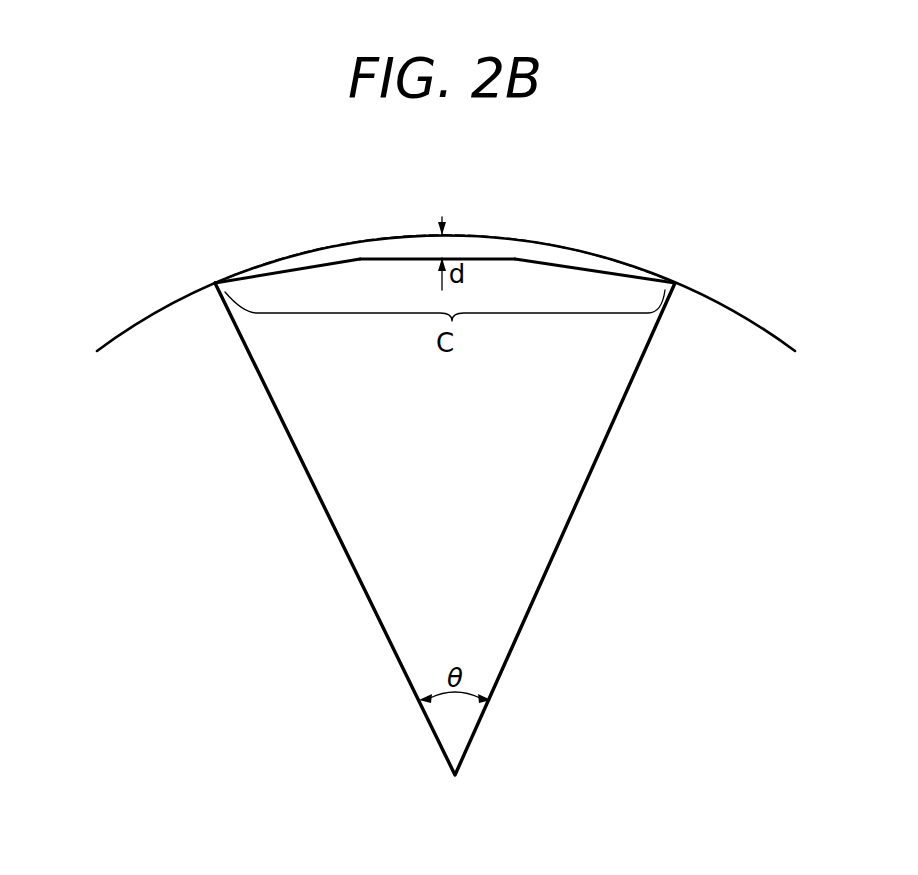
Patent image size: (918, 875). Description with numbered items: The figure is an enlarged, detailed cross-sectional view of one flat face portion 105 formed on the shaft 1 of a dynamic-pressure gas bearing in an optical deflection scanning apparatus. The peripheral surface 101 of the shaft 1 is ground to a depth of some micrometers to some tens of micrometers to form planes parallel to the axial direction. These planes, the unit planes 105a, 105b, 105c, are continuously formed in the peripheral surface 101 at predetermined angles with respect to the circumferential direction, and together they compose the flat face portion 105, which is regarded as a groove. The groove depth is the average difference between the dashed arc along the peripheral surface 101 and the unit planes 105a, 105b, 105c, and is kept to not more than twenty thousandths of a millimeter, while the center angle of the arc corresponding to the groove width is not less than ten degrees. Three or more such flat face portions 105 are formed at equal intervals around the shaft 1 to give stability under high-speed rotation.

The shaft 1 is at (153, 258).
The peripheral surface 101 is at (747, 315).
The flat face portion 105 is at (446, 203).
The unit plane 105a is at (201, 267).
The unit plane 105b is at (372, 215).
The unit plane 105c is at (603, 244).